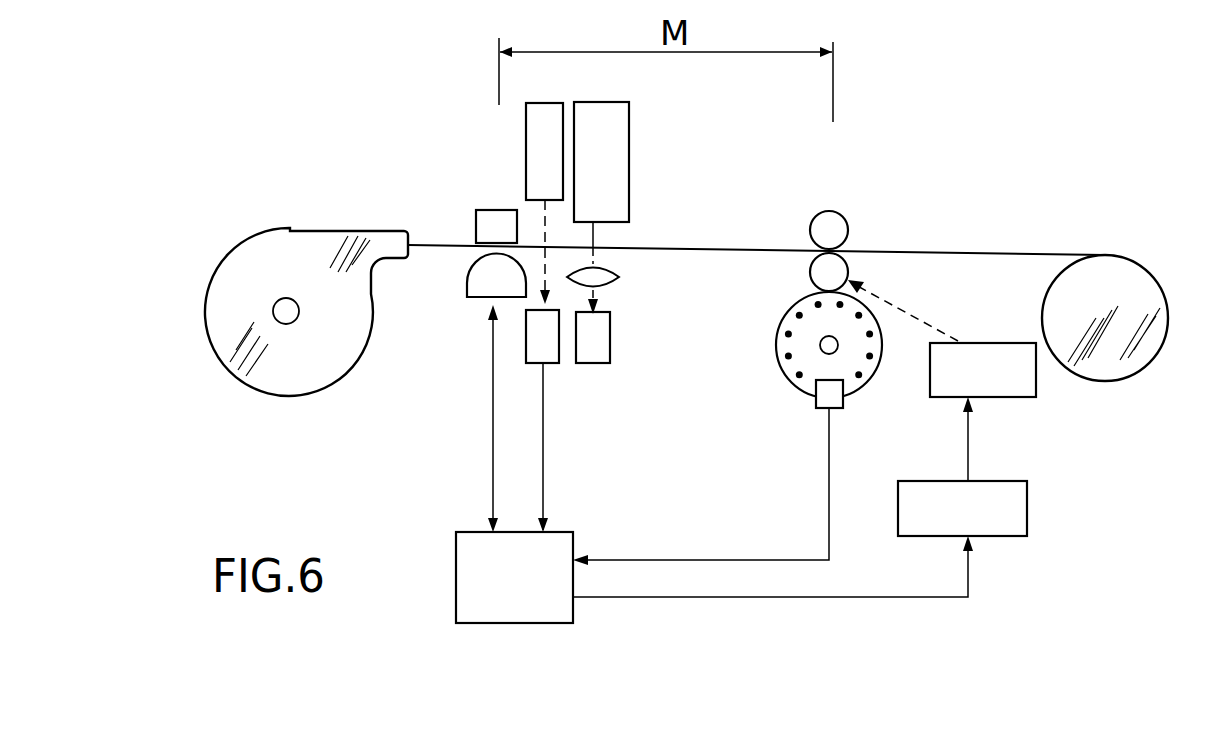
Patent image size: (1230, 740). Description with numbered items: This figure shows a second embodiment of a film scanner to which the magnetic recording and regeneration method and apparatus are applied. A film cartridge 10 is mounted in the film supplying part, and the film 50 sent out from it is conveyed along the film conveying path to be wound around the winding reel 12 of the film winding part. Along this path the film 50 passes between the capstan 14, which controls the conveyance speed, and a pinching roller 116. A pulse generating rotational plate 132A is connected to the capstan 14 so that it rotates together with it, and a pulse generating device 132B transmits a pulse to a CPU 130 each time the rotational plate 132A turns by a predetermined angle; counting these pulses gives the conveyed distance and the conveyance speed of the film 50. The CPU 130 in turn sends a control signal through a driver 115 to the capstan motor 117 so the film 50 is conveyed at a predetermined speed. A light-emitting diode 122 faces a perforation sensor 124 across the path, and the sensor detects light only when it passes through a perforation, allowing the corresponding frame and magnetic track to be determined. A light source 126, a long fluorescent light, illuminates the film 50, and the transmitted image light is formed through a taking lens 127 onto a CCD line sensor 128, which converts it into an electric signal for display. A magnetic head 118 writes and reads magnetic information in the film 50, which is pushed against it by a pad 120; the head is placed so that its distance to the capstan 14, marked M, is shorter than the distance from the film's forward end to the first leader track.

The film cartridge 10 is at (312, 372).
The winding reel 12 is at (1075, 282).
The capstan 14 is at (822, 273).
The film 50 is at (975, 253).
The driver 115 is at (1027, 512).
The pinching roller 116 is at (829, 226).
The capstan motor 117 is at (990, 398).
The magnetic head 118 is at (482, 282).
The pad 120 is at (495, 210).
The light-emitting diode 122 is at (526, 155).
The perforation sensor 124 is at (548, 363).
The light source 126 is at (629, 180).
The taking lens 127 is at (603, 280).
The CCD line sensor 128 is at (610, 355).
The CPU 130 is at (540, 612).
The pulse generating rotational plate 132A is at (858, 362).
The pulse generating device 132B is at (813, 388).